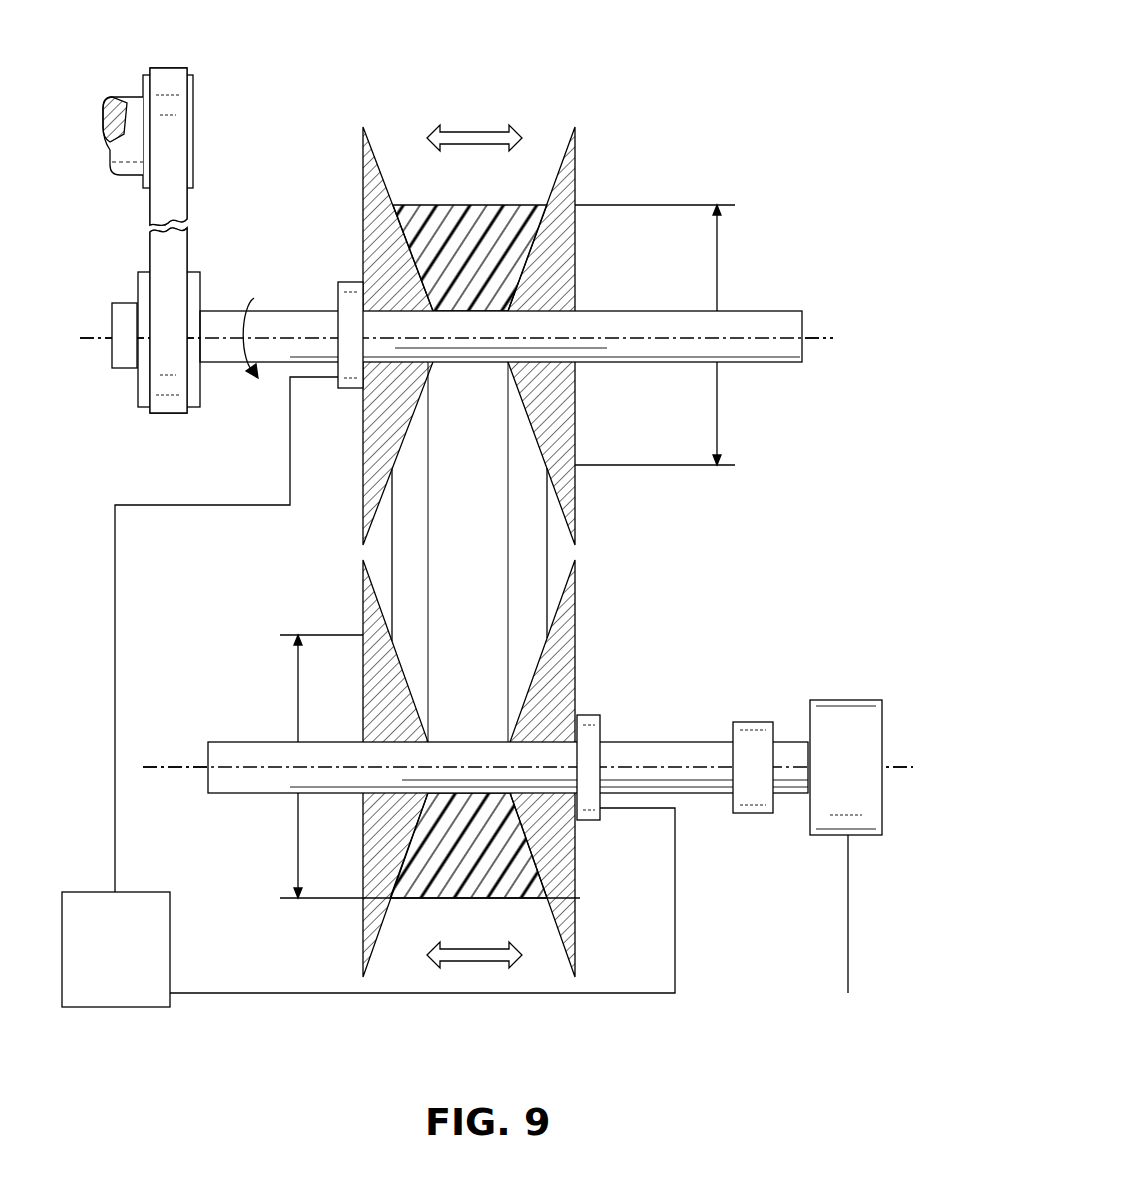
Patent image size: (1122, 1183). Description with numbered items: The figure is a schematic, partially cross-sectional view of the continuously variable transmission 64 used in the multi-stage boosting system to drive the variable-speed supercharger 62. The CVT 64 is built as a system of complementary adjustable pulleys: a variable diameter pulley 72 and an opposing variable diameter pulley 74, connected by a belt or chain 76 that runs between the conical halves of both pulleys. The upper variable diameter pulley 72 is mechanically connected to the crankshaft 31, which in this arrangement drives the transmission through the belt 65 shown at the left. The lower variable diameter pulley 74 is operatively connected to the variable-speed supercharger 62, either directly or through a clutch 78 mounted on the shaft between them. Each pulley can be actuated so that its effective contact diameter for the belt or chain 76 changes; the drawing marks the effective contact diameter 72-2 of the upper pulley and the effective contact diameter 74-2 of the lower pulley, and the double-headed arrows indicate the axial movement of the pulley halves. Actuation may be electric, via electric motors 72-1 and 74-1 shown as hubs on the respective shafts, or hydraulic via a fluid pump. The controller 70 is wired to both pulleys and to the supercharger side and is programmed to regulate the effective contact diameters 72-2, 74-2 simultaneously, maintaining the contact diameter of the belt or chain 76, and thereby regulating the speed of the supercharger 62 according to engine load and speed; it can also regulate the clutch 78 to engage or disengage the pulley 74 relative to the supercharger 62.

The crankshaft 31 is at (130, 107).
The variable-speed supercharger 62 is at (863, 822).
The continuously variable transmission 64 is at (769, 151).
The belt 65 is at (176, 252).
The controller 70 is at (128, 959).
The variable diameter pulley 72 is at (573, 258).
The electric motor 72-1 is at (352, 390).
The effective contact diameter 72-2 is at (717, 257).
The variable diameter pulley 74 is at (568, 898).
The electric motor 74-1 is at (600, 730).
The effective contact diameter 74-2 is at (297, 686).
The belt or chain 76 is at (547, 553).
The clutch 78 is at (760, 815).